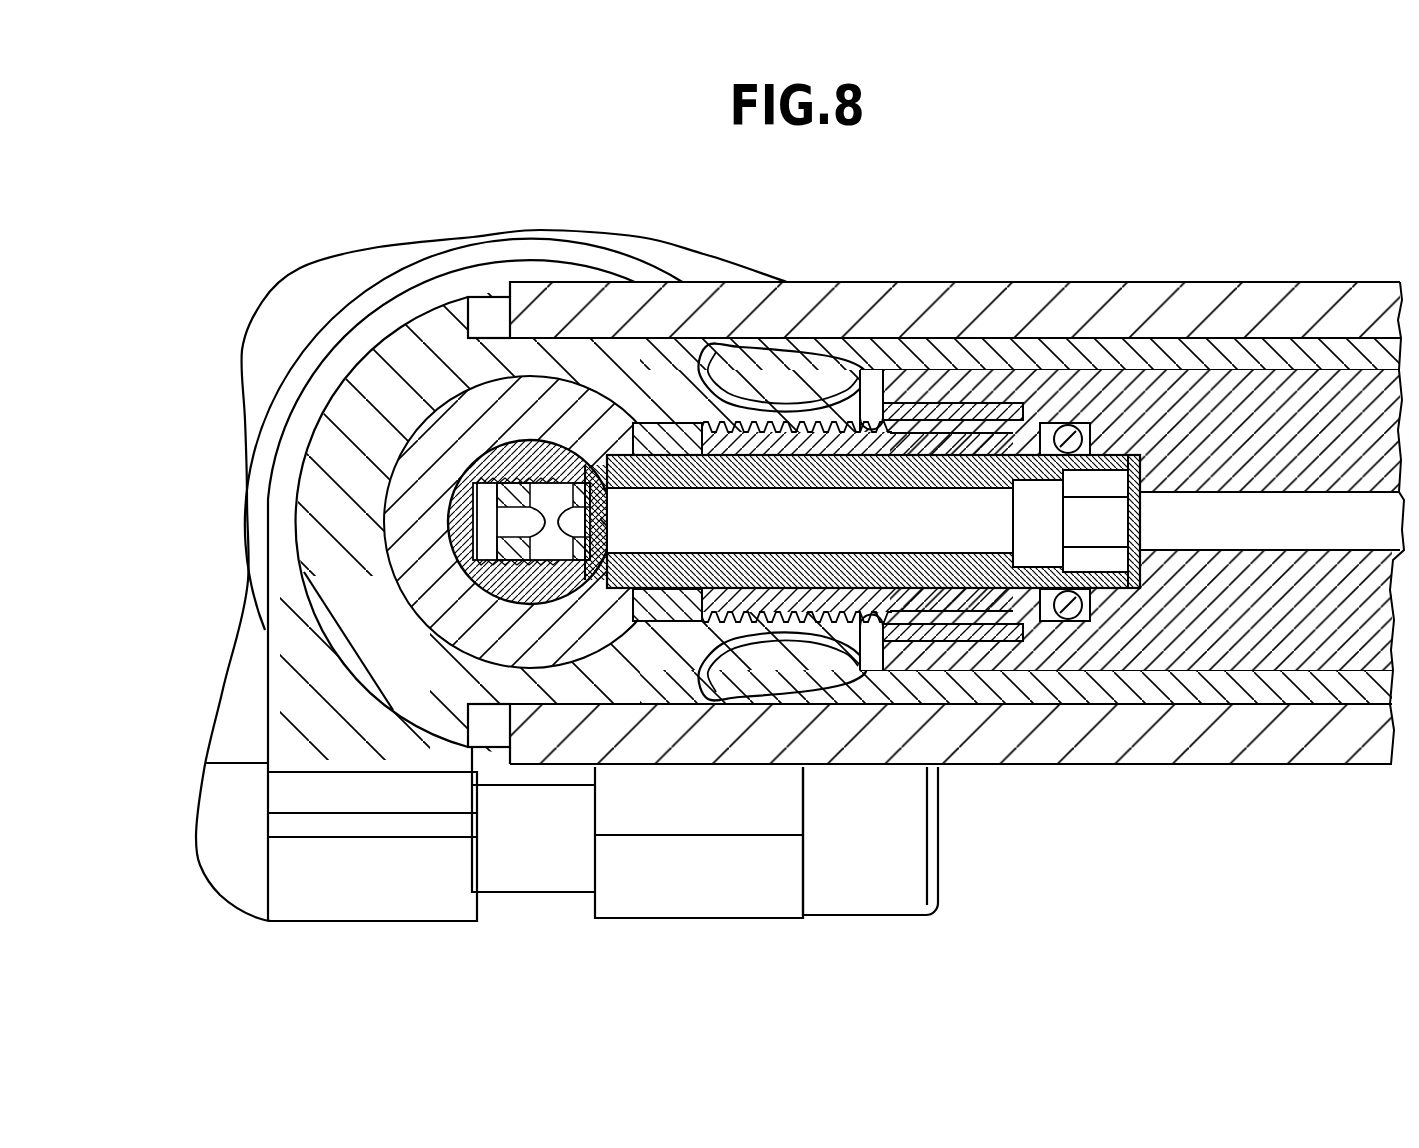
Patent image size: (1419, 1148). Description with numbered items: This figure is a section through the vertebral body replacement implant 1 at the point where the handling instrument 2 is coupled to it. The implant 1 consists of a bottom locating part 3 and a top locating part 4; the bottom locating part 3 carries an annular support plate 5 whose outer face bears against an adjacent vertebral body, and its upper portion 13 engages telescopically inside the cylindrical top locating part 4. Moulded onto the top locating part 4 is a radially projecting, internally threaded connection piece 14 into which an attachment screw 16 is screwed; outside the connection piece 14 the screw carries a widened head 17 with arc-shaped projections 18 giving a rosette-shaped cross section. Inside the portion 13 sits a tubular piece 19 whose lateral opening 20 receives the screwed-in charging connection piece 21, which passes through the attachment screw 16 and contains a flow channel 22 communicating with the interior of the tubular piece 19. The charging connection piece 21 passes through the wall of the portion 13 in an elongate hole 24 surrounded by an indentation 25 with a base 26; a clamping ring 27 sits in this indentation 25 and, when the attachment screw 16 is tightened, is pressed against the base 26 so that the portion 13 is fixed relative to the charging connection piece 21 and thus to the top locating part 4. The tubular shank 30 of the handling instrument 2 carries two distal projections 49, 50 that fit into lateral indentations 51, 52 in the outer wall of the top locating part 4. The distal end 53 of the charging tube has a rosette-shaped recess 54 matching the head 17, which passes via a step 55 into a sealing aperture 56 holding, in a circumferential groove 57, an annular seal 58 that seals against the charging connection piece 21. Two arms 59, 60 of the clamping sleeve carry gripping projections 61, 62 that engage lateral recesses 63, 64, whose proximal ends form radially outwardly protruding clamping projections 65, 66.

The implant 1 is at (362, 198).
The handling instrument 2 is at (1329, 245).
The bottom locating part 3 is at (372, 500).
The top locating part 4 is at (300, 425).
The annular support plate 5 is at (303, 286).
The upper portion 13 is at (447, 437).
The internally threaded connection piece 14 is at (797, 356).
The attachment screw 16 is at (902, 400).
The widened head 17 is at (1007, 410).
The radially protruding projections 18 is at (957, 410).
The tubular piece 19 is at (550, 604).
The lateral opening 20 is at (624, 592).
The charging connection piece 21 is at (1022, 406).
The flow channel 22 is at (888, 564).
The elongate hole 24 is at (609, 426).
The indentation 25 is at (640, 424).
The base 26 is at (690, 430).
The clamping ring 27 is at (684, 626).
The tubular shank 30 is at (1203, 292).
The projection 49 is at (552, 306).
The projection 50 is at (520, 752).
The lateral indentation 51 is at (467, 327).
The lateral indentation 52 is at (482, 734).
The distal end 53 is at (900, 736).
The recess 54 is at (944, 660).
The step 55 is at (991, 616).
The sealing aperture 56 is at (1141, 592).
The circumferential groove 57 is at (1049, 614).
The annular seal 58 is at (1092, 602).
The arm 59 is at (1130, 308).
The arm 60 is at (1170, 690).
The gripping projection 61 is at (766, 374).
The gripping projection 62 is at (793, 664).
The lateral recess 63 is at (734, 388).
The lateral recess 64 is at (746, 643).
The clamping projection 65 is at (872, 426).
The clamping projection 66 is at (851, 622).